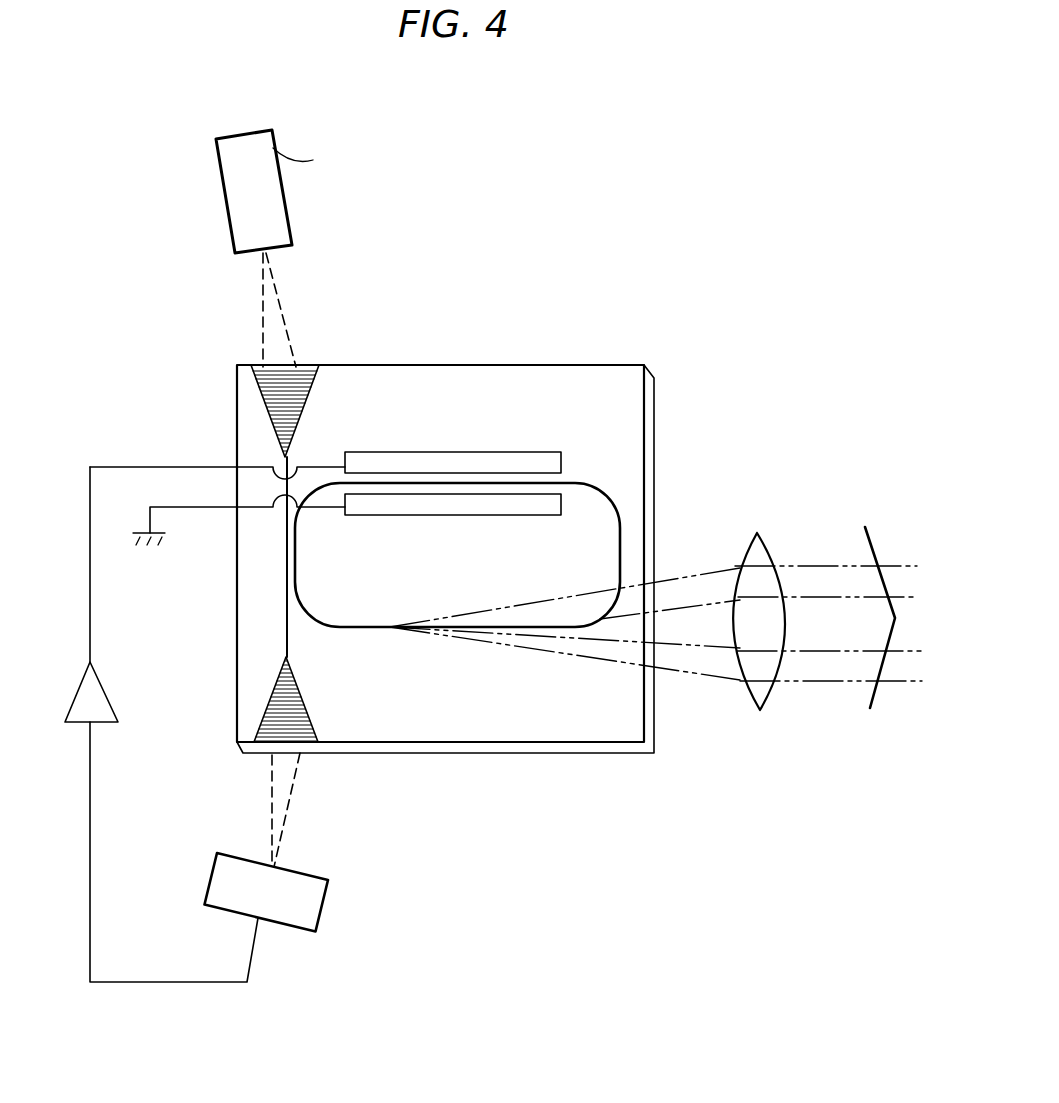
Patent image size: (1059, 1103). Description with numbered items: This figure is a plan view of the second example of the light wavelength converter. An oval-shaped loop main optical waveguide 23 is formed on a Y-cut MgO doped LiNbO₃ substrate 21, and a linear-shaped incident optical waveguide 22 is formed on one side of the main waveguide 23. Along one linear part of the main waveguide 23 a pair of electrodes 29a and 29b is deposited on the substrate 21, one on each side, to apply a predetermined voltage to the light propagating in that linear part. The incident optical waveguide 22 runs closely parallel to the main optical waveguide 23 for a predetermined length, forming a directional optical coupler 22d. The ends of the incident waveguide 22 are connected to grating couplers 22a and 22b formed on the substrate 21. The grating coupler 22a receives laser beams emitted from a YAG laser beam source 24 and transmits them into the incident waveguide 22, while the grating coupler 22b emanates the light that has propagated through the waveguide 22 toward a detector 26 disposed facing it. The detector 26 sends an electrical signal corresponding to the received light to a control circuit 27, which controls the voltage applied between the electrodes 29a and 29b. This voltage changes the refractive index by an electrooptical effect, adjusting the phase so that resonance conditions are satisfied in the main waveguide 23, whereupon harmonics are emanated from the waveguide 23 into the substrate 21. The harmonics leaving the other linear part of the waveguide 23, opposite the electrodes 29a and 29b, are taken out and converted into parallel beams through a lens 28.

The substrate 21 is at (507, 740).
The incident optical waveguide 22 is at (289, 645).
The grating coupler 22a is at (268, 414).
The grating coupler 22b is at (273, 712).
The directional optical coupler 22d is at (293, 595).
The main optical waveguide 23 is at (615, 503).
The YAG laser beam source 24 is at (237, 187).
The detector 26 is at (325, 907).
The control circuit 27 is at (72, 723).
The lens 28 is at (760, 533).
The electrode 29a is at (429, 462).
The electrode 29b is at (435, 505).